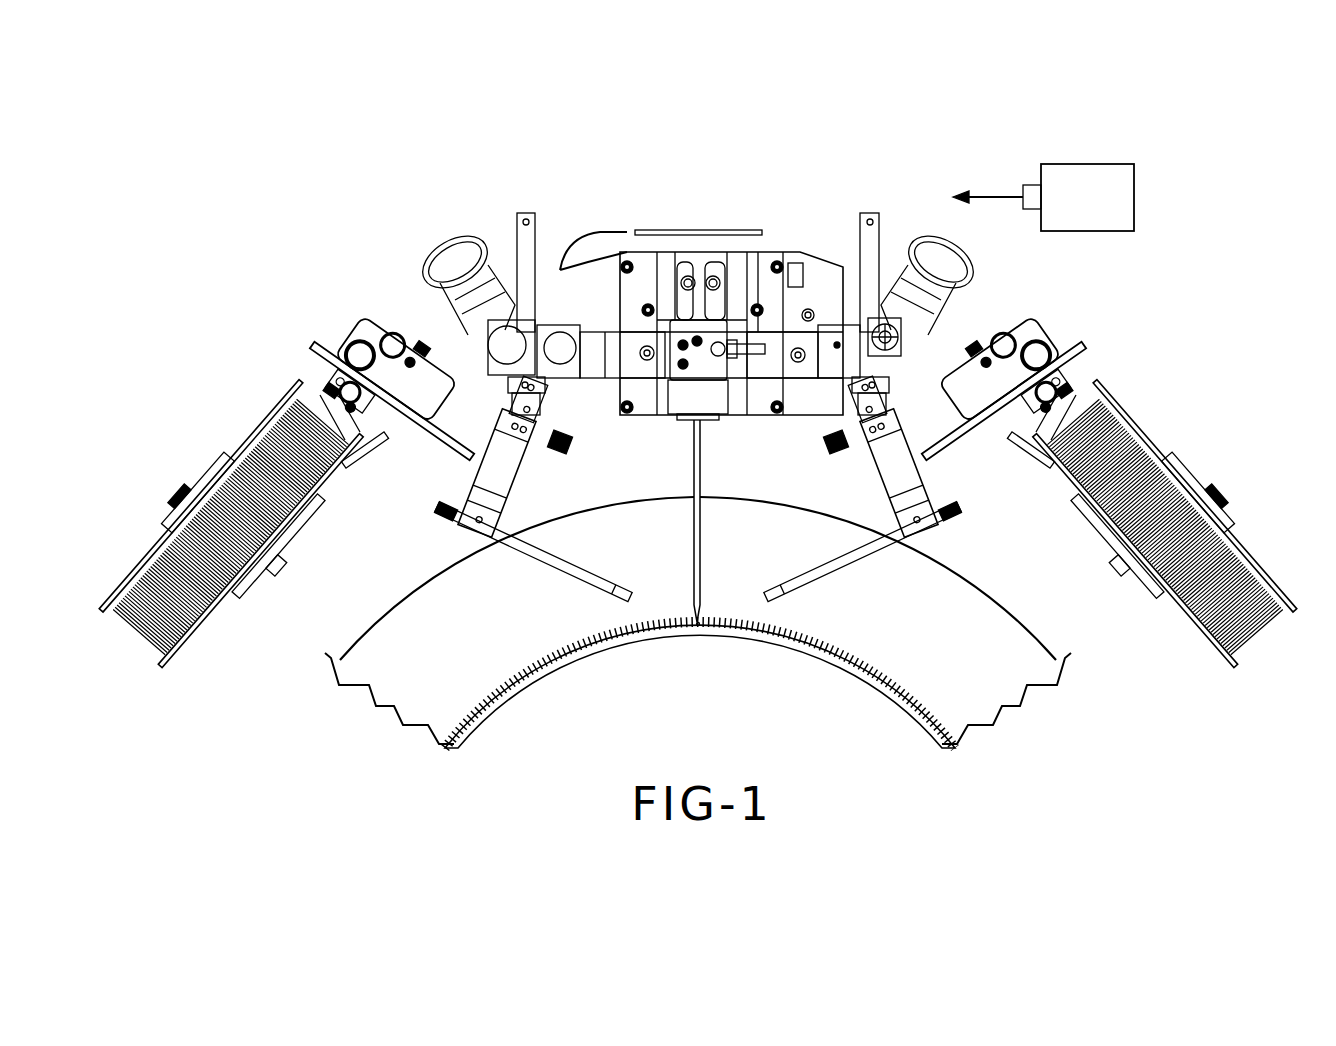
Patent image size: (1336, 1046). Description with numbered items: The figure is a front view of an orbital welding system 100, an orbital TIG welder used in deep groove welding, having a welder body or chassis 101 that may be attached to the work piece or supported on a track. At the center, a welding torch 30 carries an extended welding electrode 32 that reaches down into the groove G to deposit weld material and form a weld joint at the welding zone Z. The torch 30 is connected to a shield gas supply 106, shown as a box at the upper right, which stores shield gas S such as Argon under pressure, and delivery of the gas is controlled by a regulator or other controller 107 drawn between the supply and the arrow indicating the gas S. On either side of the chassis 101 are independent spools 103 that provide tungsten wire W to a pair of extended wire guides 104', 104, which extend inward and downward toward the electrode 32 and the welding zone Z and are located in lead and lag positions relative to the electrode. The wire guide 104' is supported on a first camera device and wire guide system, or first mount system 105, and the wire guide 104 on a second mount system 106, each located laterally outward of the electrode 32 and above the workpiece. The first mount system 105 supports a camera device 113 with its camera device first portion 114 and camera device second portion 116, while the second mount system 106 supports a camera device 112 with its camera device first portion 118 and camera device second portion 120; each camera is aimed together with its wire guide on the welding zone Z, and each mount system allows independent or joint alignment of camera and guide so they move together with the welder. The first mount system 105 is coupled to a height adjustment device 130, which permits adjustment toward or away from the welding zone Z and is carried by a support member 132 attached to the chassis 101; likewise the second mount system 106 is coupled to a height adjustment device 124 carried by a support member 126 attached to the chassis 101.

The orbital welding system 100 is at (332, 203).
The chassis 101 is at (775, 300).
The welding torch 30 is at (683, 335).
The welding electrode 32 is at (693, 588).
The spool 103 is at (262, 432).
The wire guide 104 is at (862, 561).
The wire guide 104' is at (533, 561).
The first mount system 105 is at (490, 503).
The second mount system 106 is at (906, 503).
The controller 107 is at (1030, 185).
The camera device 112 is at (927, 473).
The camera device 113 is at (473, 476).
The camera device first portion 114 is at (487, 477).
The camera device second portion 116 is at (428, 492).
The camera device first portion 118 is at (909, 477).
The camera device second portion 120 is at (940, 487).
The height adjustment device 124 is at (830, 385).
The support member 126 is at (760, 382).
The height adjustment device 130 is at (566, 385).
The support member 132 is at (636, 382).
The shield gas S is at (990, 195).
The welding zone Z is at (698, 622).
The groove G is at (905, 678).
The tungsten wire W is at (150, 642).